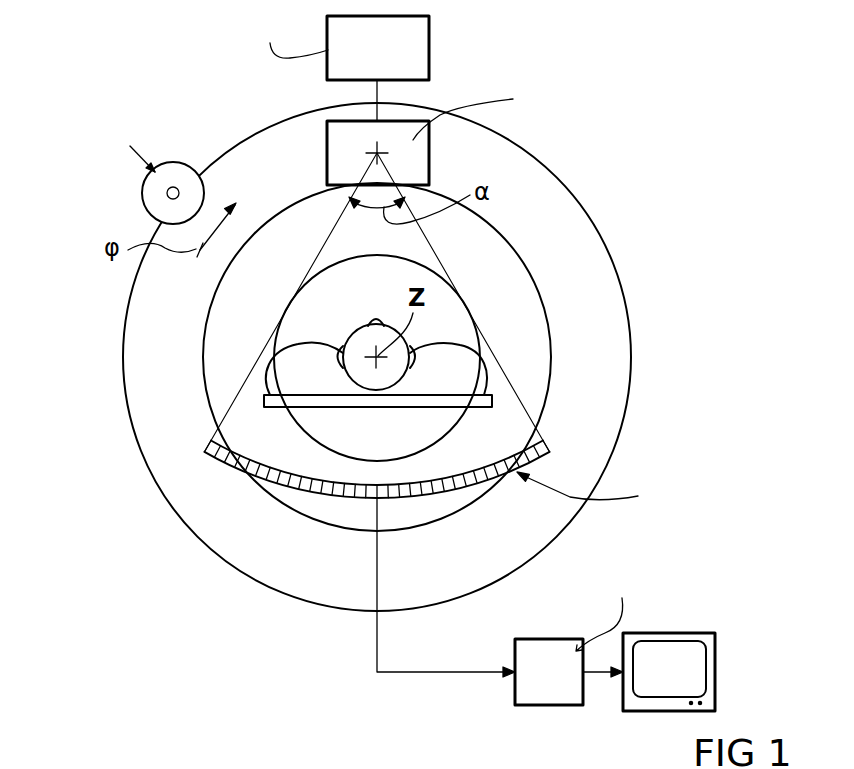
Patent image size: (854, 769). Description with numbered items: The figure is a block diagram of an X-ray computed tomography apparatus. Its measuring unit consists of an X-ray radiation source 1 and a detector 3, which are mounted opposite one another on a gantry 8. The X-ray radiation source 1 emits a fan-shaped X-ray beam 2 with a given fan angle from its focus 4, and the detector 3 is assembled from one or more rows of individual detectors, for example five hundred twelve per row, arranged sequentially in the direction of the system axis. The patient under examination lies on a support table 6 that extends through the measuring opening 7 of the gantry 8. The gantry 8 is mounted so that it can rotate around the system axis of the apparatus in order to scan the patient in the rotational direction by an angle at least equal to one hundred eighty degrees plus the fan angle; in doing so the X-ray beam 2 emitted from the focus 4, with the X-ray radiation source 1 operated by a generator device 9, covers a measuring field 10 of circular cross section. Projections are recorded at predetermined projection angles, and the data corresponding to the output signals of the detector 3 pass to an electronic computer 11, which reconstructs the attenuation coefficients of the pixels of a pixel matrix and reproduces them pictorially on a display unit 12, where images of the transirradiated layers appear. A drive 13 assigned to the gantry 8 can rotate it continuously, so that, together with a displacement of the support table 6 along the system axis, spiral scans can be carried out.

The X-ray radiation source 1 is at (430, 152).
The fan-shaped X-ray beam 2 is at (262, 356).
The detector 3 is at (456, 488).
The focus 4 is at (377, 153).
The support table 6 is at (392, 408).
The measuring opening 7 is at (493, 232).
The gantry 8 is at (590, 313).
The generator device 9 is at (430, 47).
The measuring field 10 is at (391, 257).
The electronic computer 11 is at (540, 638).
The display unit 12 is at (655, 633).
The drive 13 is at (134, 199).